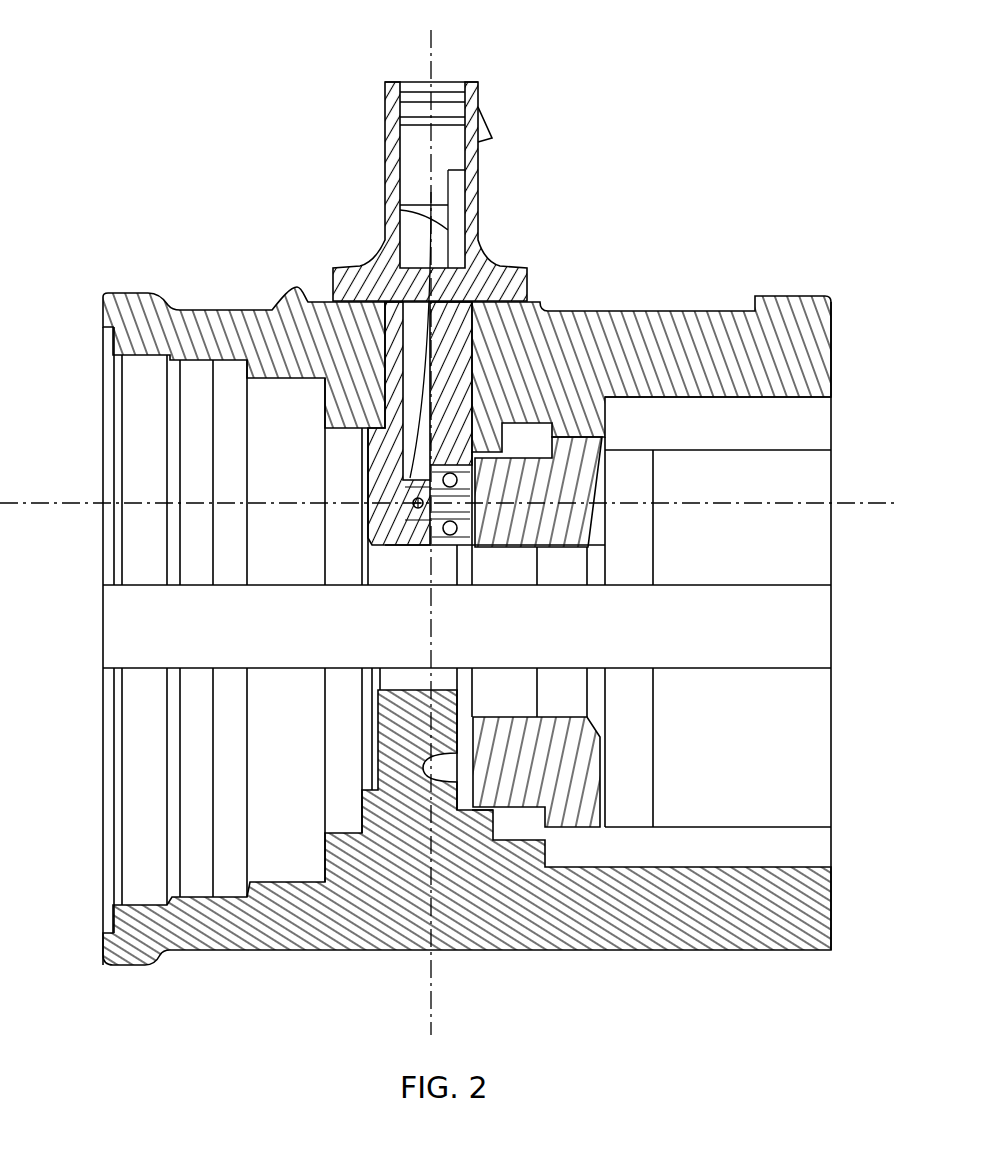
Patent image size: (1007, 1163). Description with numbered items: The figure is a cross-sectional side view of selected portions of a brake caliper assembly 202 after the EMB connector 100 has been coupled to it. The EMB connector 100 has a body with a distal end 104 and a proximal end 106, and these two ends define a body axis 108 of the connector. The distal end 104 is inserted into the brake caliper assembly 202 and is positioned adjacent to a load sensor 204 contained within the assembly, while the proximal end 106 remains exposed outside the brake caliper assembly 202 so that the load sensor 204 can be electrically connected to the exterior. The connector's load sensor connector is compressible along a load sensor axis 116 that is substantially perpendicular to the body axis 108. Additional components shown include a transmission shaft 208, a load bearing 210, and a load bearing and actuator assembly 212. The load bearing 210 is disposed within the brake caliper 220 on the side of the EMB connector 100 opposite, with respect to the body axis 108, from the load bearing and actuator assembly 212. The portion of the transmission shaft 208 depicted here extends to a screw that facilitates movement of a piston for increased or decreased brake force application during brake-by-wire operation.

The EMB connector 100 is at (487, 188).
The distal end 104 is at (410, 543).
The proximal end 106 is at (385, 91).
The body axis 108 is at (434, 36).
The load sensor axis 116 is at (873, 503).
The brake caliper assembly 202 is at (717, 292).
The load sensor 204 is at (587, 450).
The transmission shaft 208 is at (810, 633).
The load bearing 210 is at (353, 443).
The load bearing and actuator assembly 212 is at (810, 743).
The brake caliper 220 is at (805, 346).